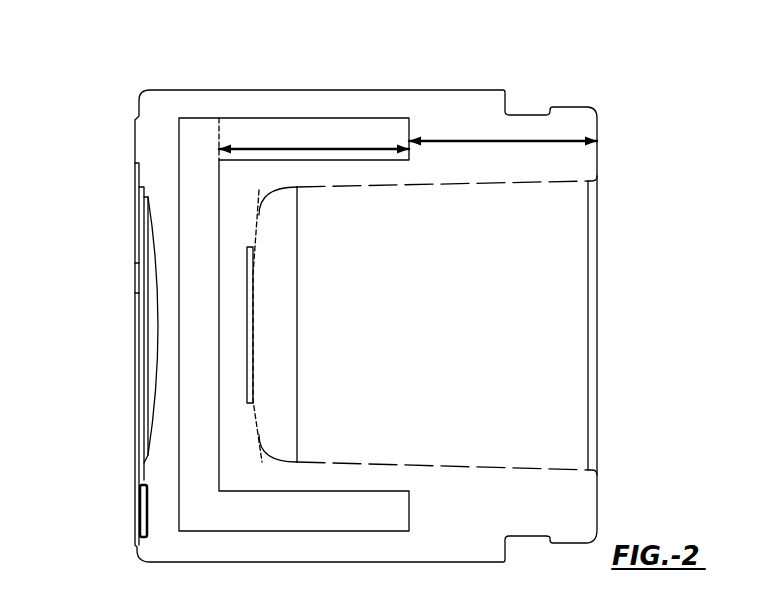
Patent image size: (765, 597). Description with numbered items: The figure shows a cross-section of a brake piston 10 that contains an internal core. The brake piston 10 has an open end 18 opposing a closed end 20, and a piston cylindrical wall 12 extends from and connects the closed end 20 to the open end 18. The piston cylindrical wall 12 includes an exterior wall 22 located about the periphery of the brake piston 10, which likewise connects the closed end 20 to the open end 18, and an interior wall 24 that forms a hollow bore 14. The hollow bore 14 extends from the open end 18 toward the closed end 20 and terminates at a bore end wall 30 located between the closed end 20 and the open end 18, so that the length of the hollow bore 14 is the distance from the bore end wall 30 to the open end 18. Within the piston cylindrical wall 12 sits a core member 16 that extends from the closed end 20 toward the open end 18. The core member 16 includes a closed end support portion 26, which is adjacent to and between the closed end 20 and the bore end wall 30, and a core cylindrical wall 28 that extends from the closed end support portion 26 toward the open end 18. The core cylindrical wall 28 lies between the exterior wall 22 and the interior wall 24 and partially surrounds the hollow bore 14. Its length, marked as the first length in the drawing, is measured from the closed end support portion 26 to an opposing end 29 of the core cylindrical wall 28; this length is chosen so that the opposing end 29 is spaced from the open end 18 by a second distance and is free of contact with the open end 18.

The brake piston 10 is at (91, 141).
The piston cylindrical wall 12 is at (562, 117).
The hollow bore 14 is at (546, 318).
The core member 16 is at (184, 330).
The open end 18 is at (598, 510).
The closed end 20 is at (133, 323).
The exterior wall 22 is at (202, 89).
The interior wall 24 is at (538, 183).
The closed end support portion 26 is at (202, 245).
The core cylindrical wall 28 is at (278, 125).
The opposing end 29 is at (410, 126).
The bore end wall 30 is at (252, 307).